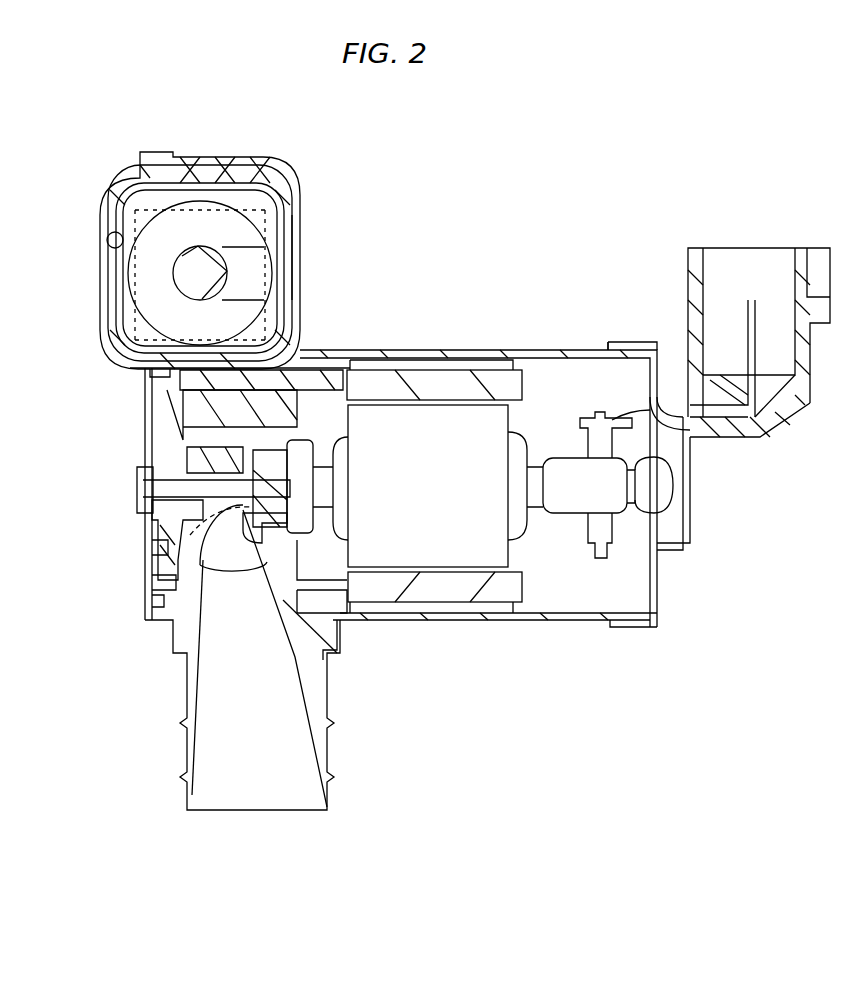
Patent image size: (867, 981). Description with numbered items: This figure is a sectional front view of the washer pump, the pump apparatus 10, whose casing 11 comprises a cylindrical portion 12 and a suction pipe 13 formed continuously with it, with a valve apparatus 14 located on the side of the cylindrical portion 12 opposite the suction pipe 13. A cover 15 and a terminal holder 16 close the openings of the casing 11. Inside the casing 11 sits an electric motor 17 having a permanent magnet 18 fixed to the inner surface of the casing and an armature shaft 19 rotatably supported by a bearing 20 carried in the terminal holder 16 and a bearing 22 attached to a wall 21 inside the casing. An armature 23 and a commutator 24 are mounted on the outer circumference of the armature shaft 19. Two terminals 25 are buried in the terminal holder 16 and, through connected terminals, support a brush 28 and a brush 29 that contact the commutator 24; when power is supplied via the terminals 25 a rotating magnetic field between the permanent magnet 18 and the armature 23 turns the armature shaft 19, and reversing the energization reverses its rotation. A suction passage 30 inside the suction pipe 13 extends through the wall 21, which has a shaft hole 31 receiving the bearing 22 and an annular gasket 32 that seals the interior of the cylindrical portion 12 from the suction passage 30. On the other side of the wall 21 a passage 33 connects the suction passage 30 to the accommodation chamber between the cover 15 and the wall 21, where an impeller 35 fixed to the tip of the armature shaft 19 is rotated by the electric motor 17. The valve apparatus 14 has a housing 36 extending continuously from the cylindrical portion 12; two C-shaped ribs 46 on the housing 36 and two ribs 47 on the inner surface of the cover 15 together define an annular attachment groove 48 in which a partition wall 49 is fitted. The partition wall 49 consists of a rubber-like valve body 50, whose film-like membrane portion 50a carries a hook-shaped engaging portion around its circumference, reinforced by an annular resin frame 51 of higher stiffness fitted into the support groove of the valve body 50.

The pump apparatus 10 is at (590, 203).
The casing 11 is at (450, 345).
The cylindrical portion 12 is at (437, 624).
The suction pipe 13 is at (330, 740).
The valve apparatus 14 is at (310, 193).
The cover 15 is at (135, 394).
The terminal holder 16 is at (791, 437).
The electric motor 17 is at (540, 575).
The permanent magnet 18 is at (415, 370).
The armature shaft 19 is at (533, 480).
The bearing 20 is at (660, 483).
The wall 21 is at (328, 652).
The bearing 22 is at (302, 440).
The armature 23 is at (268, 448).
The commutator 24 is at (578, 515).
The terminals 25 is at (738, 315).
The brush 28 is at (606, 530).
The brush 29 is at (583, 420).
The suction passage 30 is at (225, 642).
The shaft hole 31 is at (185, 530).
The gasket 32 is at (192, 563).
The passage 33 is at (185, 503).
The impeller 35 is at (170, 448).
The housing 36 is at (300, 238).
The ribs 46 is at (265, 180).
The ribs 47 is at (97, 323).
The attachment groove 48 is at (98, 250).
The partition wall 49 is at (92, 276).
The valve body 50 is at (235, 183).
The membrane portion 50a is at (191, 210).
The frame 51 is at (100, 218).